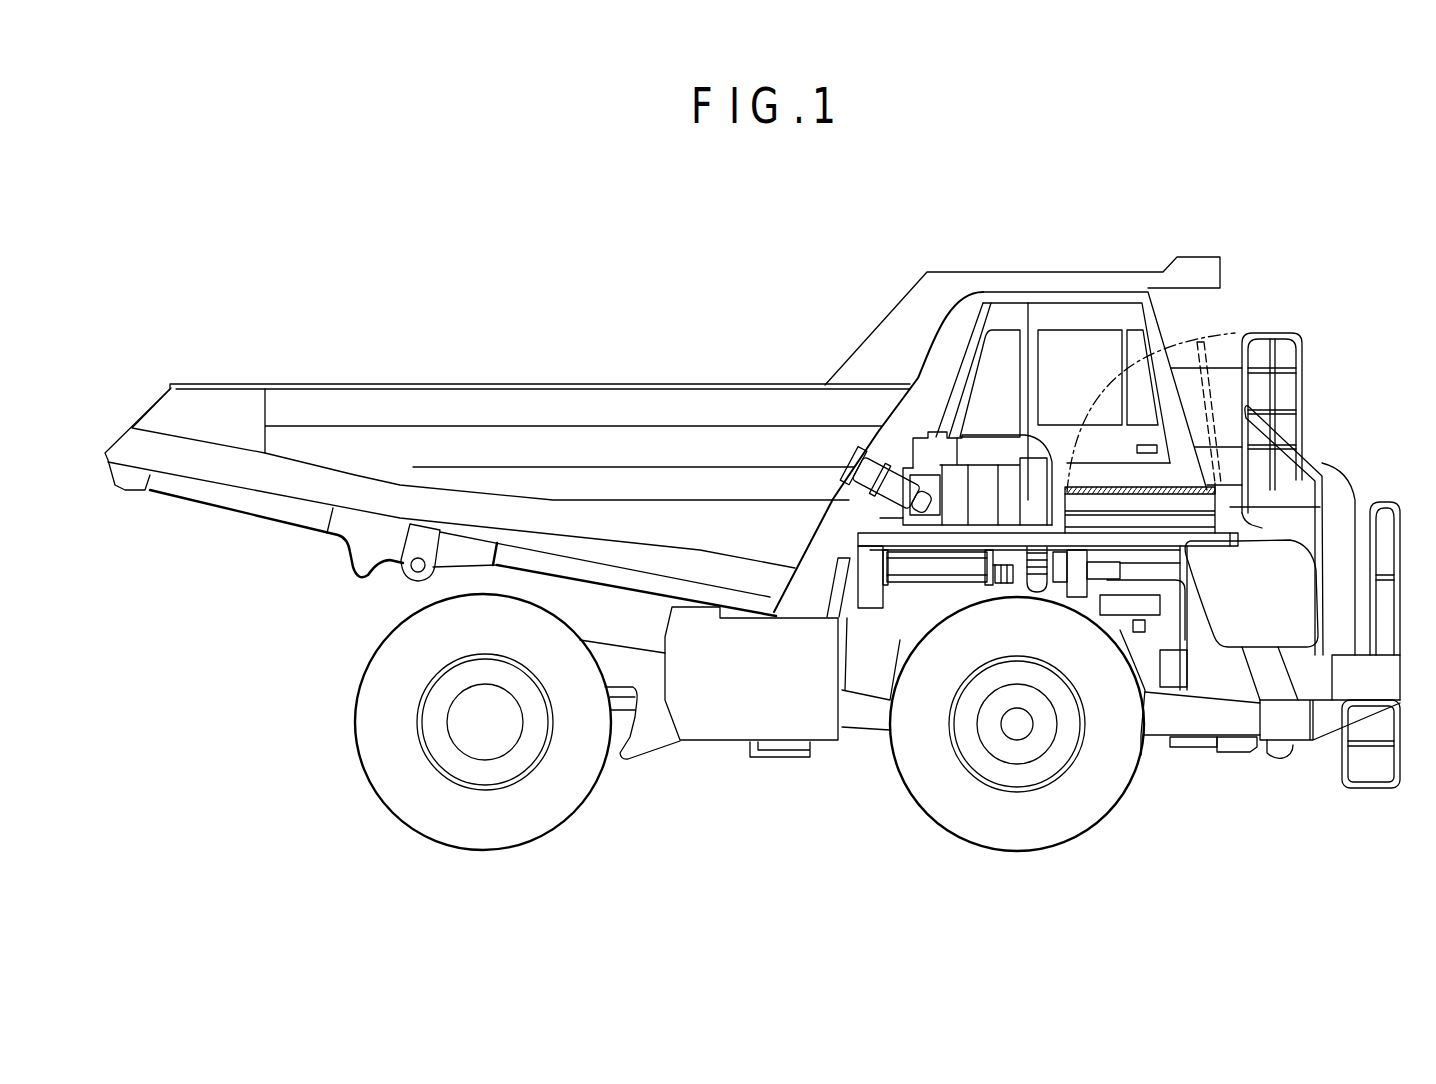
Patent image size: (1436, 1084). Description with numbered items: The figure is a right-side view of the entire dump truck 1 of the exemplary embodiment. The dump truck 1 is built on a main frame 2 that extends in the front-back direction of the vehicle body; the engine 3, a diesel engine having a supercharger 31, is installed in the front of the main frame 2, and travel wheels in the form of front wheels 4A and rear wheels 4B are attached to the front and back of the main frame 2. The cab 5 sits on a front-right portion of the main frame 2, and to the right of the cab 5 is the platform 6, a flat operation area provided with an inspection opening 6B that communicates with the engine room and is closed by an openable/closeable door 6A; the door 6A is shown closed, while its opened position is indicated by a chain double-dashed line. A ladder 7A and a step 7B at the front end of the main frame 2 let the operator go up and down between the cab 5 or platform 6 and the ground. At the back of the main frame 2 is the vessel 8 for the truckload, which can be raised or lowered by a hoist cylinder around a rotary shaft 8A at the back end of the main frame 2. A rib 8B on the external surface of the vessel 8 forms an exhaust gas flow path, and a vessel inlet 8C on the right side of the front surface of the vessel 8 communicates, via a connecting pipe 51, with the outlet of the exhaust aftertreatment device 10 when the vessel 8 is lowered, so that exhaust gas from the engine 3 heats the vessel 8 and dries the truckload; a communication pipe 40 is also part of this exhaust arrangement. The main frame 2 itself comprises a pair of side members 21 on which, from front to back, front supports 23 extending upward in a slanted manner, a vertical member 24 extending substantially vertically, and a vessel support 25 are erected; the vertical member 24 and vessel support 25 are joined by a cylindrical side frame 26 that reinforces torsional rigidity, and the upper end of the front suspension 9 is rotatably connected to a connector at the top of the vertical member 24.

The dump truck 1 is at (733, 232).
The main frame 2 is at (862, 683).
The engine 3 is at (1147, 672).
The front wheels 4A is at (1010, 853).
The rear wheels 4B is at (484, 850).
The cab 5 is at (1163, 348).
The platform 6 is at (1178, 487).
The door 6A is at (1208, 368).
The inspection opening 6B is at (1116, 472).
The ladder 7A is at (1374, 790).
The step 7B is at (1279, 521).
The vessel 8 is at (563, 386).
The rotary shaft 8A is at (410, 565).
The rib 8B is at (283, 482).
The vessel inlet 8C is at (860, 461).
The front suspension 9 is at (996, 590).
The exhaust aftertreatment device 10 is at (992, 447).
The side members 21 is at (1197, 722).
The front supports 23 is at (1283, 690).
The vertical member 24 is at (1007, 546).
The vessel support 25 is at (858, 577).
The side frame 26 is at (900, 574).
The supercharger 31 is at (1078, 598).
The communication pipe 40 is at (1046, 566).
The connecting pipe 51 is at (888, 440).